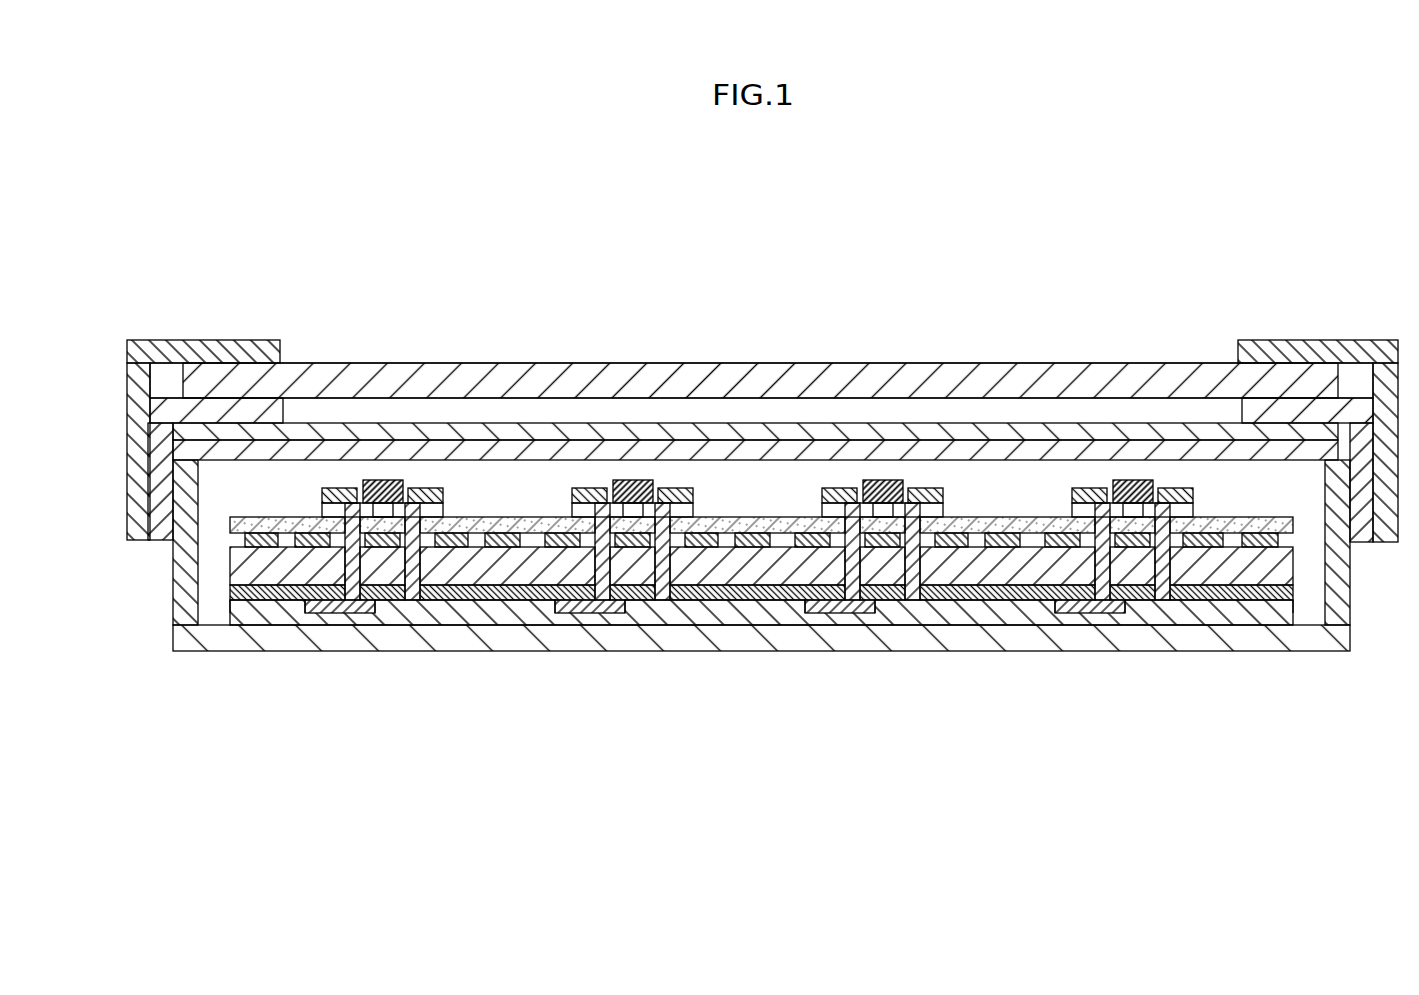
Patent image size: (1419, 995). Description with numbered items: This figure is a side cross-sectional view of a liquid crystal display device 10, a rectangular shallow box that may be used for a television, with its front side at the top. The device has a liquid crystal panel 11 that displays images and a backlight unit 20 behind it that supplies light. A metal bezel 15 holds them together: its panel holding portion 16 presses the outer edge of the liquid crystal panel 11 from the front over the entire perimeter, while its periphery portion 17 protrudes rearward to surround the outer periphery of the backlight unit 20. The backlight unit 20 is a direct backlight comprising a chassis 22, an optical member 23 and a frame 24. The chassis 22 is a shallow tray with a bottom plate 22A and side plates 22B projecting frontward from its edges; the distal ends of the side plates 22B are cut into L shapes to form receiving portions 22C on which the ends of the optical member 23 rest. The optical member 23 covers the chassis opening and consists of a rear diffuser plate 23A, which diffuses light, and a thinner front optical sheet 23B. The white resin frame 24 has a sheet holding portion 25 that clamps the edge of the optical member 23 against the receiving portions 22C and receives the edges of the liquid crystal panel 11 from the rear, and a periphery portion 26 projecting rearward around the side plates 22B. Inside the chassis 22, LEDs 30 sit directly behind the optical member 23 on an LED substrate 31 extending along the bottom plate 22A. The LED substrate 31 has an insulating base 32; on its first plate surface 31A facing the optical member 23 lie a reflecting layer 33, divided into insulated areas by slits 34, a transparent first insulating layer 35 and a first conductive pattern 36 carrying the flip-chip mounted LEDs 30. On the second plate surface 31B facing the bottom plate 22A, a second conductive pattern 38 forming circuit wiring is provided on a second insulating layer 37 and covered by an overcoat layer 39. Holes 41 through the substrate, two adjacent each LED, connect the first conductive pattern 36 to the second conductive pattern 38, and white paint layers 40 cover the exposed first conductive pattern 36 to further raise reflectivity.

The liquid crystal display device 10 is at (1260, 233).
The liquid crystal panel 11 is at (1150, 373).
The bezel 15 is at (203, 282).
The panel holding portion 16 is at (200, 341).
The periphery portion 17 is at (130, 381).
The backlight unit 20 is at (858, 677).
The chassis 22 is at (718, 588).
The bottom plate 22A is at (263, 640).
The side plates 22B is at (185, 590).
The receiving portions 22C is at (196, 468).
The optical member 23 is at (493, 282).
The diffuser plate 23A is at (370, 437).
The optical sheet 23B is at (470, 448).
The frame 24 is at (1418, 283).
The sheet holding portion 25 is at (1303, 408).
The periphery portion 26 is at (1365, 455).
The LEDs 30 is at (885, 492).
The LED substrate 31 is at (979, 484).
The first plate surface 31A is at (765, 525).
The second plate surface 31B is at (767, 628).
The base 32 is at (1272, 573).
The reflecting layer 33 is at (1015, 548).
The slits 34 is at (985, 548).
The first insulating layer 35 is at (1293, 528).
The first conductive pattern 36 is at (1210, 548).
The second insulating layer 37 is at (1282, 604).
The second conductive pattern 38 is at (1070, 612).
The overcoat layer 39 is at (510, 613).
The white paint layers 40 is at (680, 495).
The holes 41 is at (1188, 505).